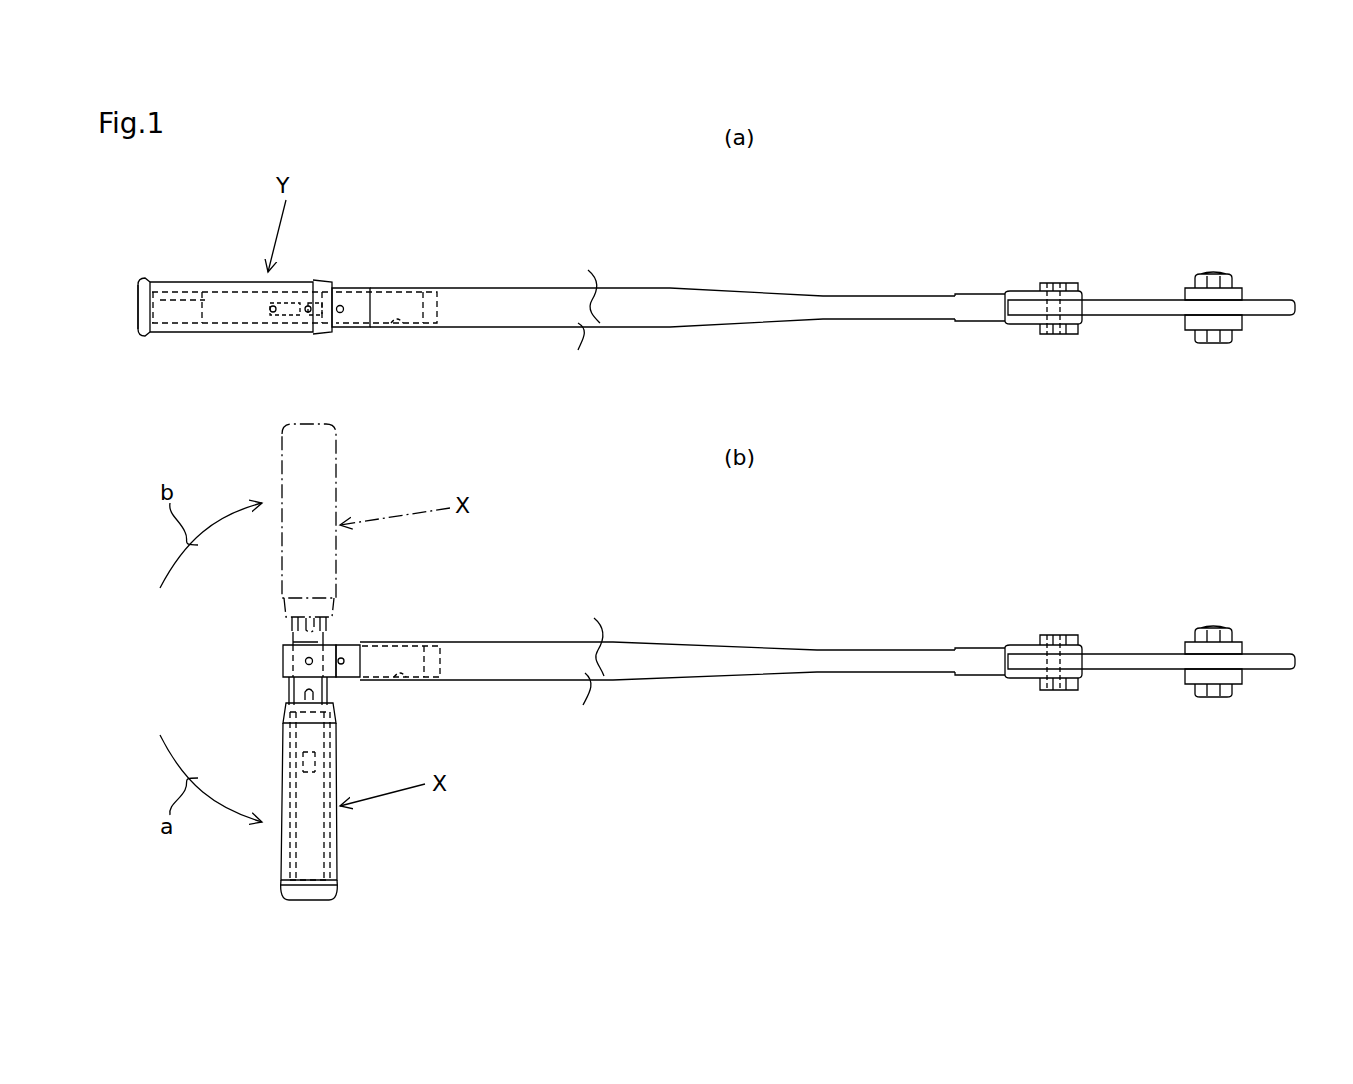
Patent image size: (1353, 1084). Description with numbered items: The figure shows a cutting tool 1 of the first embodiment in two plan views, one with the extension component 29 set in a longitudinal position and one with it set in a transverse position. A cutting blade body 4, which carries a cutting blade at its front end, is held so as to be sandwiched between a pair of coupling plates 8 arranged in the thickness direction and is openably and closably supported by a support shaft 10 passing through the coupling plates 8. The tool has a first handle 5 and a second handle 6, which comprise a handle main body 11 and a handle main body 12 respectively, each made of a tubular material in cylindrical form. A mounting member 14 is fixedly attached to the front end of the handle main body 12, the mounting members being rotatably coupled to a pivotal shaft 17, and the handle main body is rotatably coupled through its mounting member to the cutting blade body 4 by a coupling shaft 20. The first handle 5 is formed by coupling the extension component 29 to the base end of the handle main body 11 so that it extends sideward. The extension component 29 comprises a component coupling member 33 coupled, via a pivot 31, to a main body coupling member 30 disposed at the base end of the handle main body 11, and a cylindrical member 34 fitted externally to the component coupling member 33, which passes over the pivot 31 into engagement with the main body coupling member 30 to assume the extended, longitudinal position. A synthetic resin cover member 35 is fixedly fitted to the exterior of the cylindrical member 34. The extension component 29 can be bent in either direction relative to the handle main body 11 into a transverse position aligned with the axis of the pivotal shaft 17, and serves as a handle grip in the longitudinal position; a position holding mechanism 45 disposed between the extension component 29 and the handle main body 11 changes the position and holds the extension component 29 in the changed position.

The cutting tool 1 is at (808, 212).
The cutting blade body 4 is at (1165, 316).
The first handle 5 is at (468, 288).
The second handle 6 is at (820, 294).
The coupling plates 8 is at (1192, 298).
The support shaft 10 is at (1215, 278).
The handle main body 11 is at (497, 328).
The handle main body 12 is at (722, 300).
The mounting member 14 is at (975, 306).
The pivotal shaft 17 is at (1048, 308).
The coupling shaft 20 is at (1063, 288).
The extension component 29 is at (300, 276).
The main body coupling member 30 is at (348, 315).
The pivot 31 is at (275, 312).
The component coupling member 33 is at (230, 312).
The cylindrical member 34 is at (222, 292).
The cover member 35 is at (190, 333).
The position holding mechanism 45 is at (335, 278).